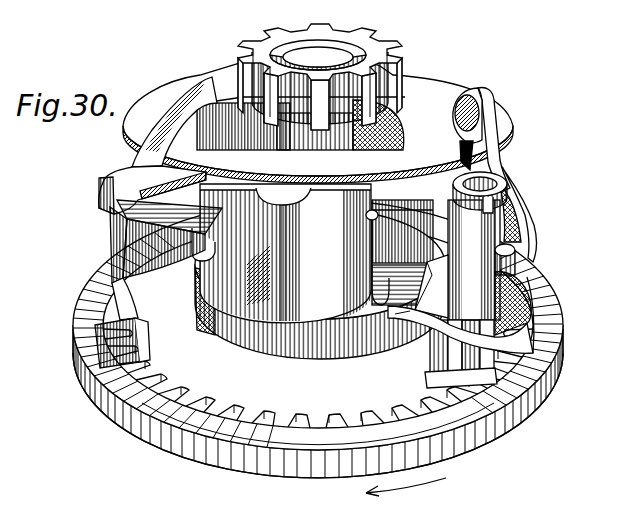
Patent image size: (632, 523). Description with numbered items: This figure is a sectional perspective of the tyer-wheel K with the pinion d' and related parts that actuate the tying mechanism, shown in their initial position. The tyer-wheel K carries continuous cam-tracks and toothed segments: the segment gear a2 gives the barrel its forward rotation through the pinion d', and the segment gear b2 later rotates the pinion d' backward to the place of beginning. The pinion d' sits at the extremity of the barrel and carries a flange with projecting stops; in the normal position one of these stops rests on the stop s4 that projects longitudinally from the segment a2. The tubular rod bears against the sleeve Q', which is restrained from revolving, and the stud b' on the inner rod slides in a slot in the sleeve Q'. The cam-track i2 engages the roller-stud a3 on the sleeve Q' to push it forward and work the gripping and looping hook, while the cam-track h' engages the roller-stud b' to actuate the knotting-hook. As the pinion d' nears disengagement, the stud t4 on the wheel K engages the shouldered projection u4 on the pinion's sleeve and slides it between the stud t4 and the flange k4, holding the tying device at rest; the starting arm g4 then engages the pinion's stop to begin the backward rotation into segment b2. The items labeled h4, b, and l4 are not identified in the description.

The tyer-wheel K is at (318, 339).
The segment gear a2 is at (320, 284).
The cam-track i2 is at (283, 194).
The hook h4 is at (203, 245).
The stop s4 is at (371, 257).
The pinion b is at (320, 69).
The flange k4 is at (130, 246).
The starting arm g4 is at (118, 322).
The sleeve Q' is at (474, 260).
The roller-stud a3 is at (457, 177).
The cam-track h' is at (529, 213).
The stud b' is at (537, 259).
The shouldered projection u4 is at (432, 286).
The pinion d' is at (455, 354).
The stud t4 is at (461, 313).
The plate tip l4 is at (402, 307).
The segment gear b2 is at (437, 414).